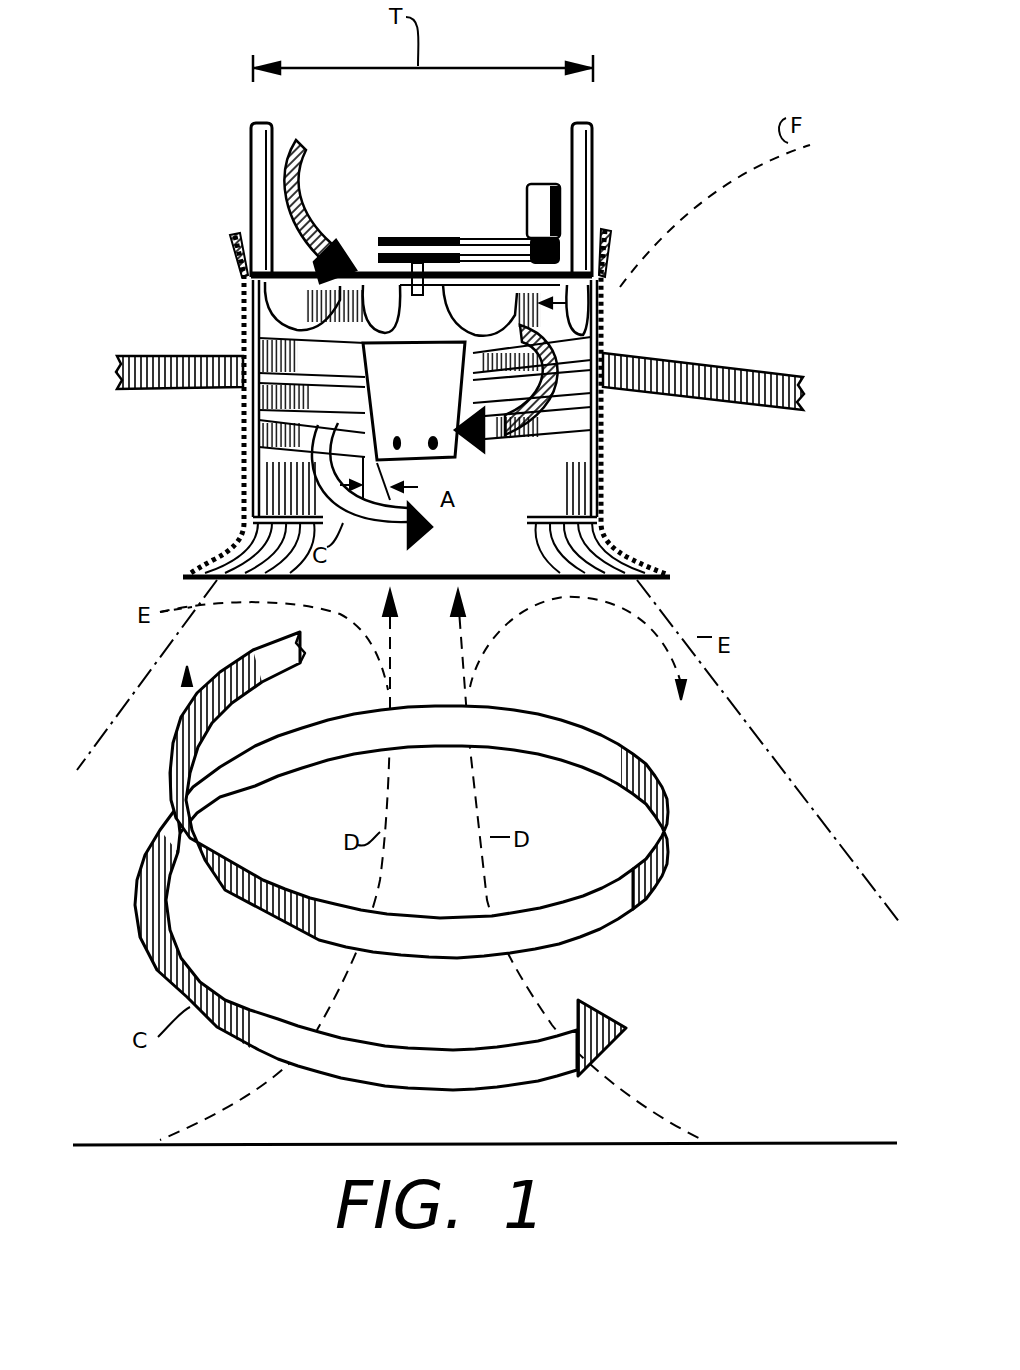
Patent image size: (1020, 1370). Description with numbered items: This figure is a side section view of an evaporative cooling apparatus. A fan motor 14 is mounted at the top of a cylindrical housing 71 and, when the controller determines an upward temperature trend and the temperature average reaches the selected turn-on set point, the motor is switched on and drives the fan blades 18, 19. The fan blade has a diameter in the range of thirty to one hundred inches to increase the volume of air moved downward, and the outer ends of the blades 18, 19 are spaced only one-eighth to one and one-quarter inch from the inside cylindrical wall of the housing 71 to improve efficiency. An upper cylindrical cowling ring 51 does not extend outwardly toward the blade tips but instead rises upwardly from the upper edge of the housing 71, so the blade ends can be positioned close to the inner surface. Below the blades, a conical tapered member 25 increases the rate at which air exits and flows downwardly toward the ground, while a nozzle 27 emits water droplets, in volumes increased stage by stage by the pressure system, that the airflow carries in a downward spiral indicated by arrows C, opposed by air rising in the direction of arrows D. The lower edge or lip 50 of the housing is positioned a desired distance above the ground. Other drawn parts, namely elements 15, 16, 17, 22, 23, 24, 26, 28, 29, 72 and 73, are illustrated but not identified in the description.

The fan motor 14 is at (557, 236).
The motor 15 is at (481, 241).
The drive shaft 16 is at (438, 241).
The bearing support 17 is at (394, 241).
The fan blade 18 is at (277, 303).
The fan blade 19 is at (598, 318).
The lower vane section 22 is at (247, 457).
The vanes 23 is at (245, 400).
The radial fins 24 is at (257, 352).
The conical tapered member 25 is at (411, 385).
The nozzle 26 is at (385, 445).
The nozzle 27 is at (467, 453).
The nozzle opening 28 is at (430, 468).
The fan 29 is at (456, 320).
The lower edge or lip 50 is at (190, 570).
The upper cylindrical cowling ring 51 is at (230, 257).
The cylindrical housing 71 is at (640, 530).
The left support post 72 is at (251, 207).
The right support post 73 is at (591, 188).